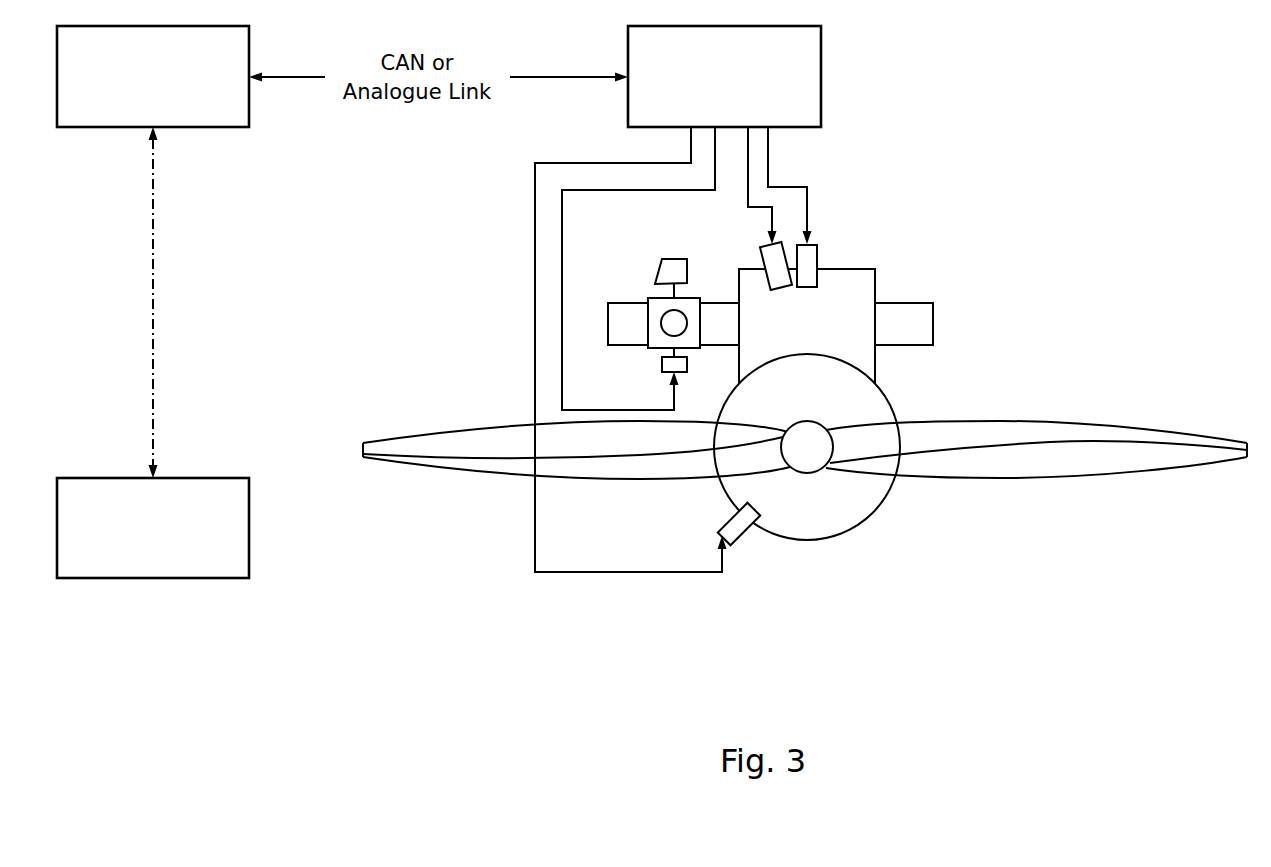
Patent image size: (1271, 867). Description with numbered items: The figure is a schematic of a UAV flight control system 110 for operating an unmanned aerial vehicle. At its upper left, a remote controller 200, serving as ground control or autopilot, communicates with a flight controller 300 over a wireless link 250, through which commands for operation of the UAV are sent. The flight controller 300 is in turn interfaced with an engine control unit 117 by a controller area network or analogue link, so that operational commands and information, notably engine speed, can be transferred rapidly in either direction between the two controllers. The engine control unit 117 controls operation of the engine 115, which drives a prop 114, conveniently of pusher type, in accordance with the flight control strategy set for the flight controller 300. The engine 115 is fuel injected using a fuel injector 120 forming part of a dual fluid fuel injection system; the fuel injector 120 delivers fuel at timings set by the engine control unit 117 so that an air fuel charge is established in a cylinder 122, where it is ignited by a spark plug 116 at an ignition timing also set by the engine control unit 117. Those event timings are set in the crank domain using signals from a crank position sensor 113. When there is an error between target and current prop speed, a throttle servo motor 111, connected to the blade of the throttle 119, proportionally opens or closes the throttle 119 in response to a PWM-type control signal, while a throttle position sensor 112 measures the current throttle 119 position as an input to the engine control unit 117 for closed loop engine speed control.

The UAV flight control system 110 is at (410, 632).
The throttle servo motor 111 is at (655, 262).
The throttle position sensor 112 is at (662, 364).
The crank position sensor 113 is at (747, 540).
The prop 114 is at (1130, 452).
The engine 115 is at (880, 505).
The spark plug 116 is at (818, 254).
The engine control unit 117 is at (628, 106).
The throttle 119 is at (697, 351).
The fuel injector 120 is at (760, 258).
The cylinder 122 is at (875, 360).
The remote controller 200 is at (250, 534).
The wireless link 250 is at (153, 240).
The flight controller 300 is at (214, 127).